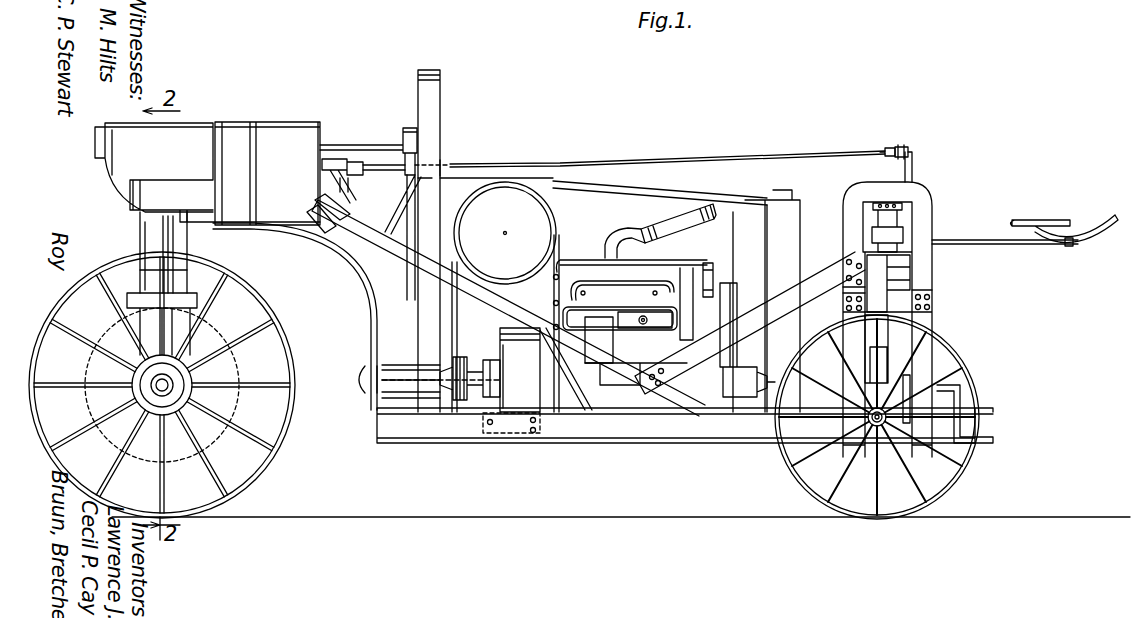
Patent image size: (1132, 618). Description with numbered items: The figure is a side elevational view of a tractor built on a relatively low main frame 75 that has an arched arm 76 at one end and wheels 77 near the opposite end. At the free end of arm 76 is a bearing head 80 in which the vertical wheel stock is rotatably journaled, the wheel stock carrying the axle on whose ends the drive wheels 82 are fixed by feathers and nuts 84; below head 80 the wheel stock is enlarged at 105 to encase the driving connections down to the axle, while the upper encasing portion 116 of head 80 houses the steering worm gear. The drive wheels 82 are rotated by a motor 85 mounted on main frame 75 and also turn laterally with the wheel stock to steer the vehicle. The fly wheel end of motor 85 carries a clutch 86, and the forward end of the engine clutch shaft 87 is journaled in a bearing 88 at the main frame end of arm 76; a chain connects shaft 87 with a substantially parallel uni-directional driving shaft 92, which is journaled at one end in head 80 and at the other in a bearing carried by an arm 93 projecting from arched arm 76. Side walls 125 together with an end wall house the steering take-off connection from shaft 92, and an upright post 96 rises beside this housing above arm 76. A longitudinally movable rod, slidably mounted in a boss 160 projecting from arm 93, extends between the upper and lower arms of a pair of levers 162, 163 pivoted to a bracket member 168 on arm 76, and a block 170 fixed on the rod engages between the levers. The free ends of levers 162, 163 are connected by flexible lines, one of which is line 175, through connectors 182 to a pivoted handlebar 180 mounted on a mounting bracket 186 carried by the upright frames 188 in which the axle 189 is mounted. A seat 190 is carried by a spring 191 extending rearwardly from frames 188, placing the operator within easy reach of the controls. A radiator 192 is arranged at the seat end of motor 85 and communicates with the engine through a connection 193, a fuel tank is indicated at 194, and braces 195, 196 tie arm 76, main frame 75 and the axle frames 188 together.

The main frame 75 is at (573, 432).
The arched arm 76 is at (365, 278).
The wheels 77 is at (790, 478).
The bearing head 80 is at (140, 236).
The wheels 82 is at (268, 458).
The nuts 84 is at (155, 387).
The motor 85 is at (600, 287).
The clutch 86 is at (458, 358).
The engine clutch shaft 87 is at (433, 395).
The bearing 88 is at (385, 387).
The uni-directional driving shaft 92 is at (353, 147).
The arm 93 is at (398, 196).
The steering post 96 is at (438, 95).
The enlarged portion of yoke 105 is at (138, 313).
The encasing portion of head 116 is at (112, 182).
The side walls 125 is at (292, 110).
The boss 160 is at (421, 174).
The lever 162 is at (325, 163).
The lever 163 is at (350, 158).
The bracket member 168 is at (330, 232).
The block 170 is at (326, 206).
The flexible line 175 is at (650, 160).
The handlebar 180 is at (904, 150).
The connectors 182 is at (885, 152).
The mounting bracket 186 is at (912, 167).
The upright frames 188 is at (933, 208).
The axle 189 is at (905, 272).
The seat 190 is at (1070, 210).
The spring 191 is at (1030, 244).
The radiator 192 is at (792, 207).
The connection 193 is at (672, 230).
The fuel tank 194 is at (502, 193).
The brace 195 is at (407, 267).
The brace 196 is at (673, 367).